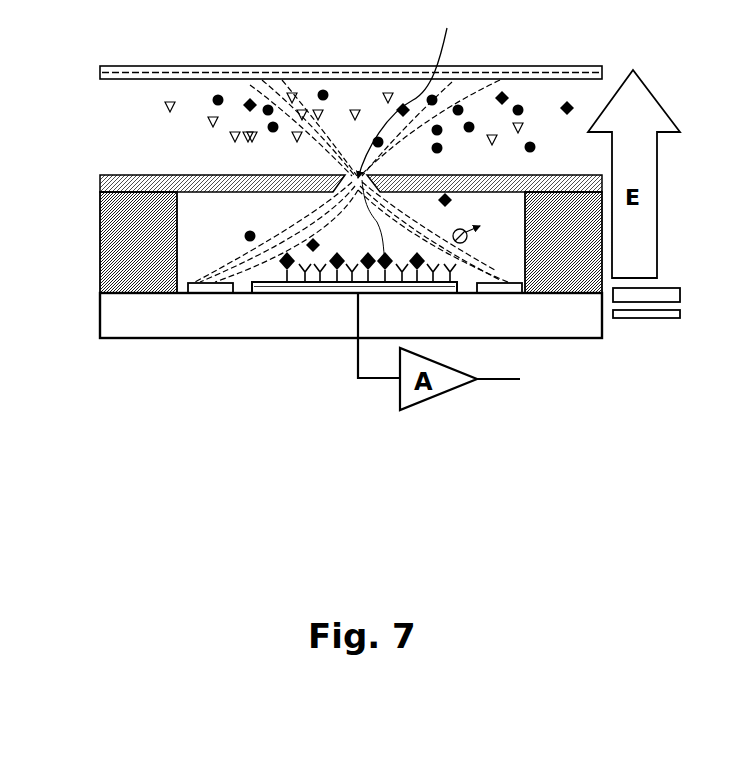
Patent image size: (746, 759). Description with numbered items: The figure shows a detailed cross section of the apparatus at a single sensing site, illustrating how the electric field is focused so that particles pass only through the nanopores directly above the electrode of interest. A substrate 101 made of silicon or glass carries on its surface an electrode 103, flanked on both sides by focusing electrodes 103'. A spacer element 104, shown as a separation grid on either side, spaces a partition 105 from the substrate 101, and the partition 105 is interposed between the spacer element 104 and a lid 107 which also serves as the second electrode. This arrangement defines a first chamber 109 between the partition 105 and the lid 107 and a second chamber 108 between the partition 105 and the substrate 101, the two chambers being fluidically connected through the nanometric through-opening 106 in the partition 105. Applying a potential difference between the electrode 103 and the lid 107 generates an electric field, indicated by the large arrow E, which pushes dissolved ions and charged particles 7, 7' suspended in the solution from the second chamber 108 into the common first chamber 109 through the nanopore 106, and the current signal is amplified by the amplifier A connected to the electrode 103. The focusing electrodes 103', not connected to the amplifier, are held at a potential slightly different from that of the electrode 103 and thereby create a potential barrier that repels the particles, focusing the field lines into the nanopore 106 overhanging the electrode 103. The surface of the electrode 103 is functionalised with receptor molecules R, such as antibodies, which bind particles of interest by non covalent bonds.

The substrate 101 is at (157, 343).
The electrode 103 is at (354, 301).
The focusing electrode 103' is at (355, 352).
The spacer element 104 is at (99, 243).
The partition 105 is at (98, 177).
The through-opening 106 is at (411, 94).
The lid 107 is at (213, 67).
The second chamber 108 is at (226, 235).
The first chamber 109 is at (122, 125).
The particle 7 is at (491, 84).
The particle 7' is at (530, 84).